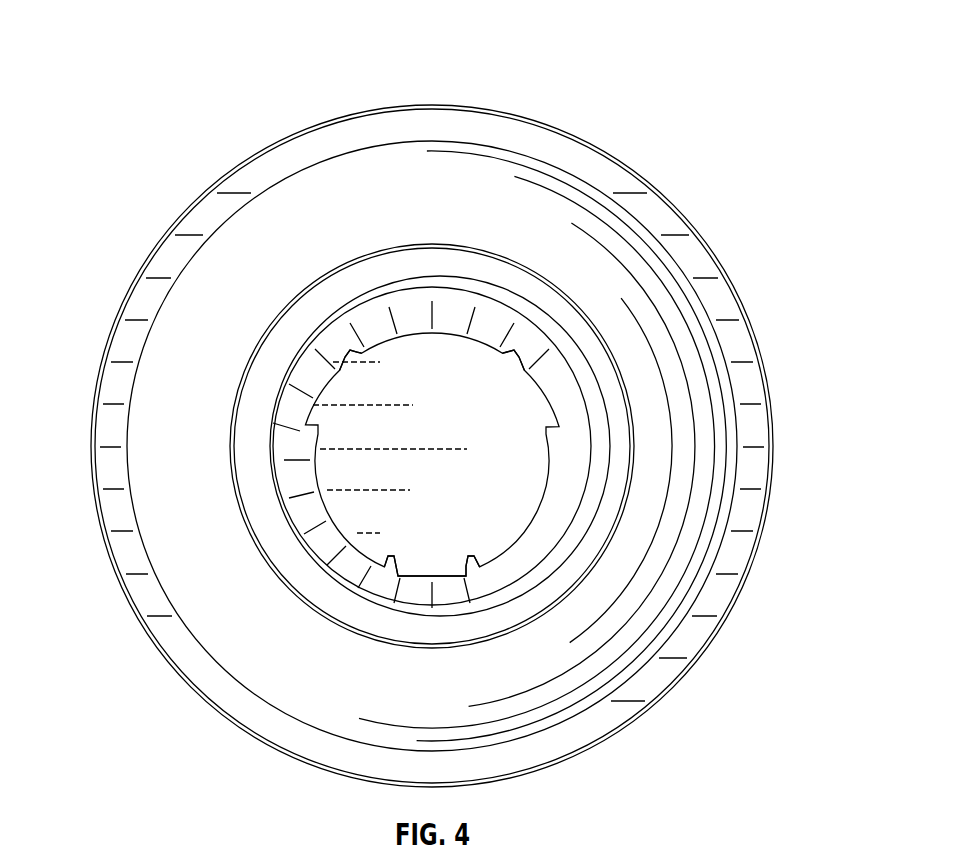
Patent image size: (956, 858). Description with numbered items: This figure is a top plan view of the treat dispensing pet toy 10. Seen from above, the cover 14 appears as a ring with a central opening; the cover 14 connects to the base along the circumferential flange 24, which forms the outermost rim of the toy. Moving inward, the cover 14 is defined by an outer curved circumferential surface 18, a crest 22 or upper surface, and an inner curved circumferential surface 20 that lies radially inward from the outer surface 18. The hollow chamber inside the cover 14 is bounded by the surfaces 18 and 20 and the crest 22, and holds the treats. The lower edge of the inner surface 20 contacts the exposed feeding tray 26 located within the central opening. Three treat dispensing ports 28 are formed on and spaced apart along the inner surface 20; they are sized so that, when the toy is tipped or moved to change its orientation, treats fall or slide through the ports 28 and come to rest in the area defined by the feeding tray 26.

The treat dispensing pet toy 10 is at (335, 74).
The cover 14 is at (499, 141).
The outer curved circumferential surface 18 is at (399, 168).
The inner curved circumferential surface 20 is at (397, 284).
The crest 22 is at (272, 323).
The circumferential flange 24 is at (104, 499).
The feeding tray 26 is at (520, 455).
The treat dispensing port 28 is at (335, 368).